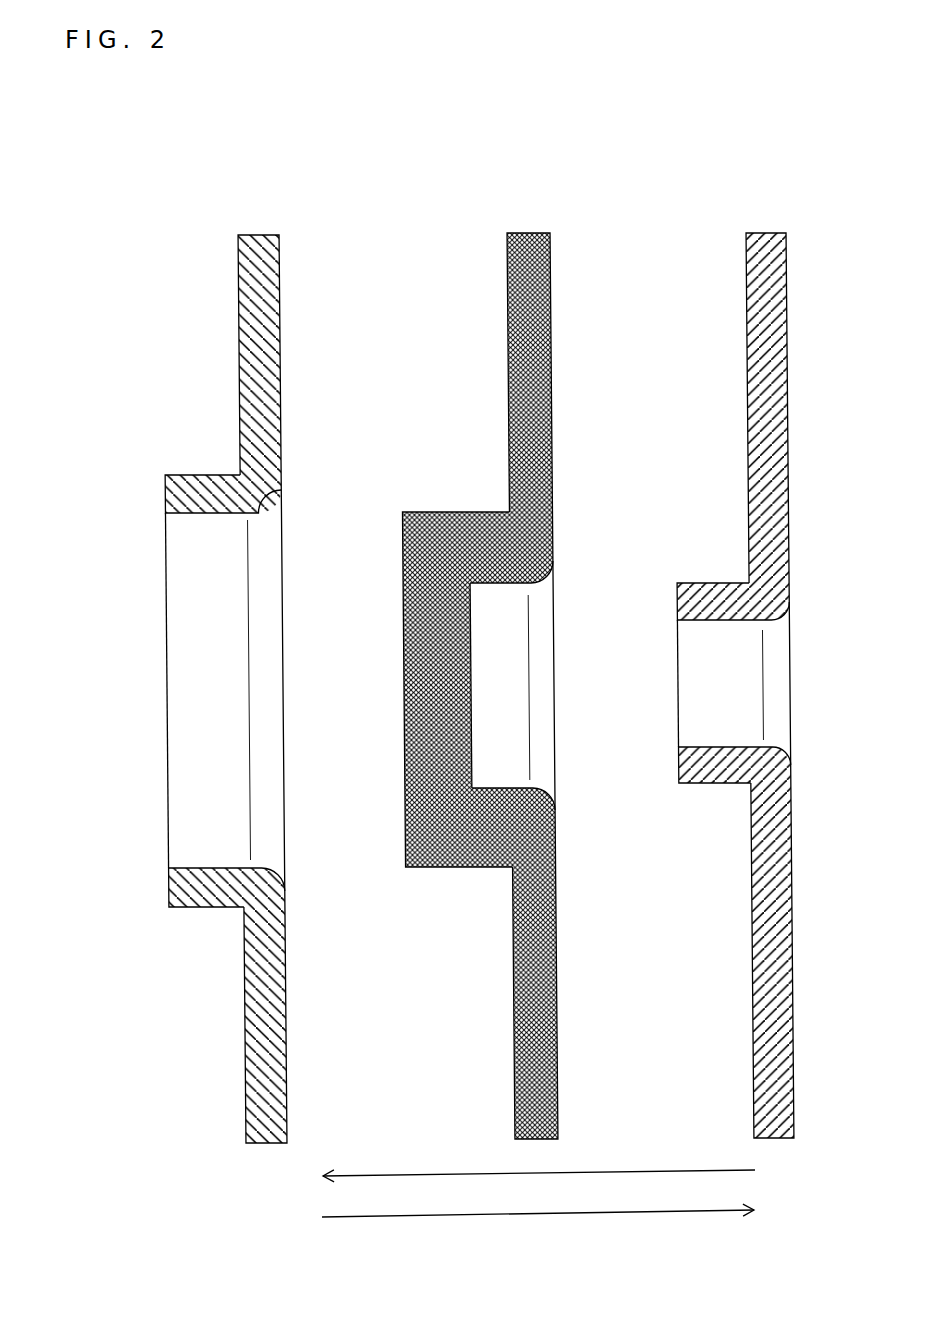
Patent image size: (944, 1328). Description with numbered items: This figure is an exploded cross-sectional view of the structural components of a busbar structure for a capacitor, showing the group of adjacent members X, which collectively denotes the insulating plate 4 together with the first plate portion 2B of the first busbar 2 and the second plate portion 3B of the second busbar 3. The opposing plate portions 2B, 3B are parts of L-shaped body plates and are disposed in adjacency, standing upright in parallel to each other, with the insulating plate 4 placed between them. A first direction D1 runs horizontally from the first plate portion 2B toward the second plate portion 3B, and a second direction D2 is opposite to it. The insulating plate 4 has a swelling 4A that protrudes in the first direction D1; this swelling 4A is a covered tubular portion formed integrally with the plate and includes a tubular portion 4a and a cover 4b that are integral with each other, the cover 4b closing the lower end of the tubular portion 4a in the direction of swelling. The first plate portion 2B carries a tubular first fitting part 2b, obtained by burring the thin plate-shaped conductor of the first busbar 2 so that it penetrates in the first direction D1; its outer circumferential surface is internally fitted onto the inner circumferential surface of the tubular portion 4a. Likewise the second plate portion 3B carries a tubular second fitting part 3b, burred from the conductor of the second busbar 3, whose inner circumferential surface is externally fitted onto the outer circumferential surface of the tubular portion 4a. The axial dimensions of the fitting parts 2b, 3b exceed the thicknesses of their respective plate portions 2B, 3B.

The group of adjacent members X is at (221, 184).
The first busbar 2 is at (768, 221).
The first plate portion 2B is at (760, 402).
The first fitting part 2b is at (724, 600).
The second busbar 3 is at (257, 221).
The second plate portion 3B is at (243, 355).
The second fitting part 3b is at (186, 483).
The insulating plate 4 is at (527, 221).
The swelling 4A is at (405, 501).
The tubular portion 4a is at (461, 535).
The cover 4b is at (420, 673).
The first direction D1 is at (515, 1176).
The second direction D2 is at (564, 1216).